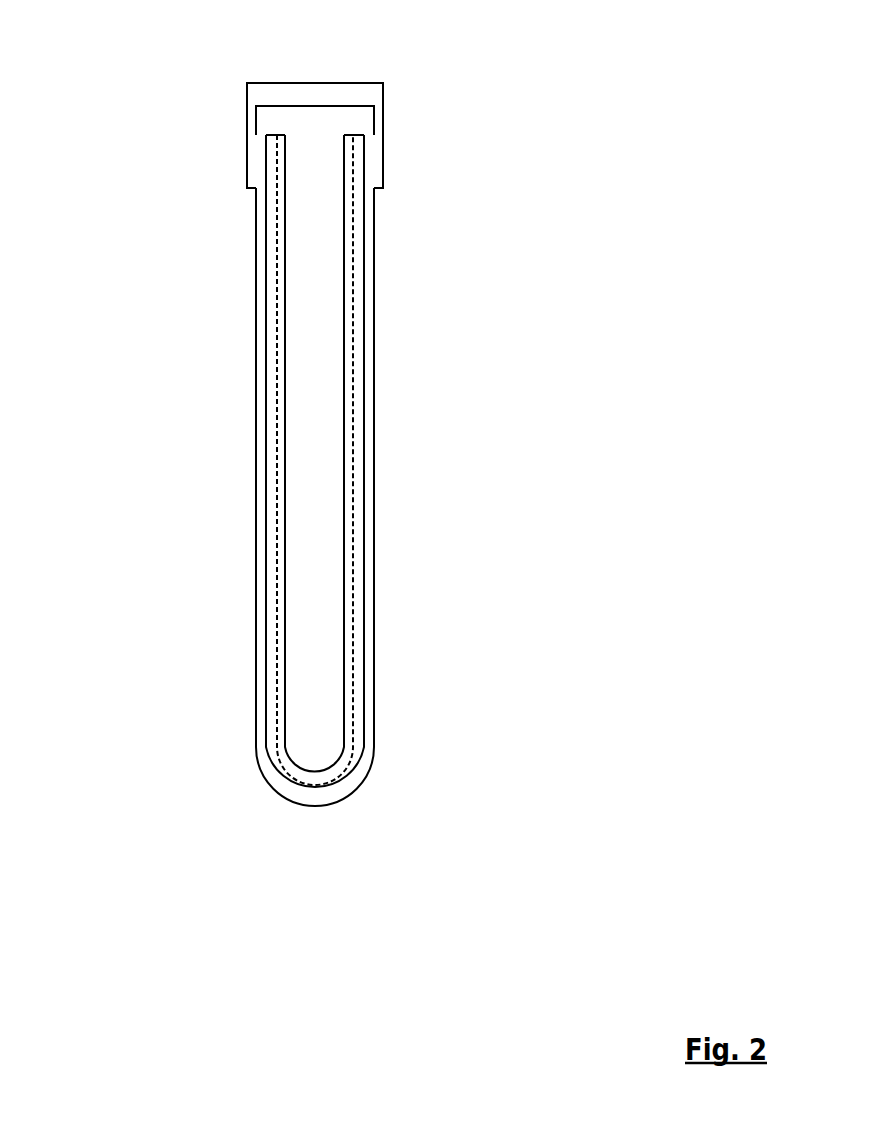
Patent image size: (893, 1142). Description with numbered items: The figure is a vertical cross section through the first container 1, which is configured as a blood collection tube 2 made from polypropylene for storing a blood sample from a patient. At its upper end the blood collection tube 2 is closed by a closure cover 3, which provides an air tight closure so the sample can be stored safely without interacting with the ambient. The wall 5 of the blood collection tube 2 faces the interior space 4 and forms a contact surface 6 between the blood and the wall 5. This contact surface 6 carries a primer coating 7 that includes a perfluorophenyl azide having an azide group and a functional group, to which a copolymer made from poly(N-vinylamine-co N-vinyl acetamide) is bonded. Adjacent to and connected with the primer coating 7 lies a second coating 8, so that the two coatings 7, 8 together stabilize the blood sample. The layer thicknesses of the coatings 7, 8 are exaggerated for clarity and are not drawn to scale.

The container 1 is at (360, 470).
The blood collection tube 2 is at (360, 470).
The closure cover 3 is at (245, 137).
The interior space 4 is at (313, 308).
The wall 5 is at (255, 446).
The contact surface 6 is at (273, 635).
The primer coating 7 is at (278, 530).
The second coating 8 is at (285, 444).